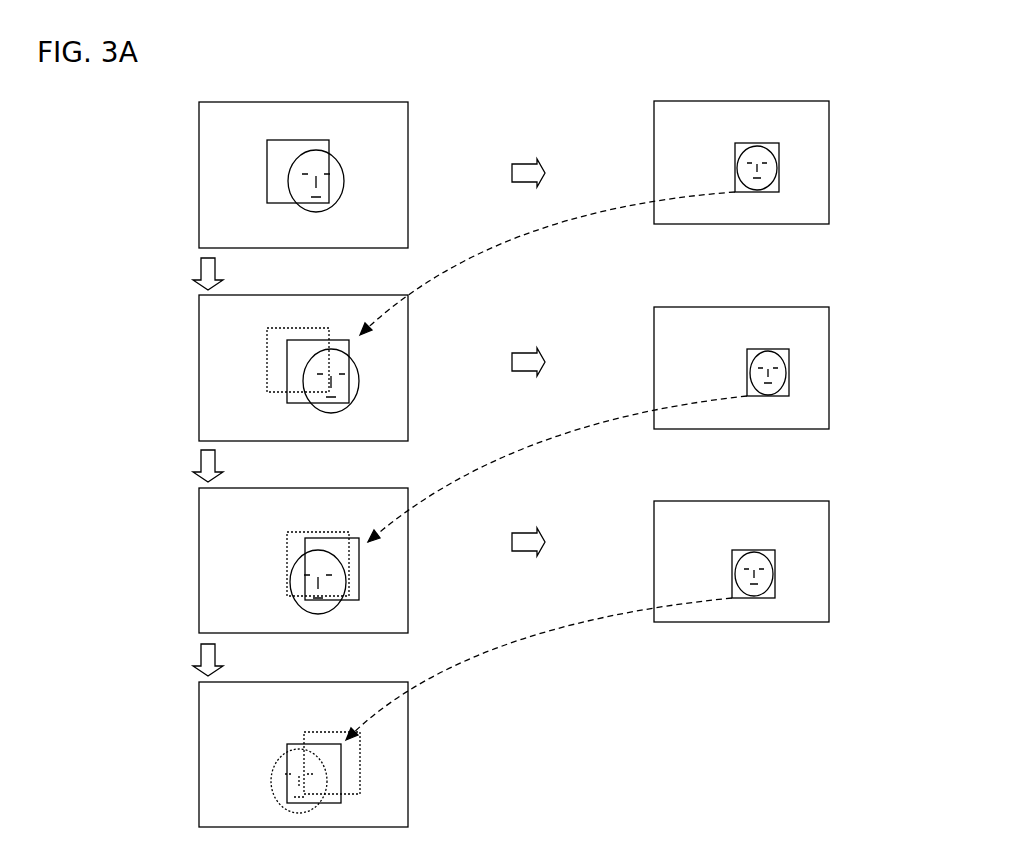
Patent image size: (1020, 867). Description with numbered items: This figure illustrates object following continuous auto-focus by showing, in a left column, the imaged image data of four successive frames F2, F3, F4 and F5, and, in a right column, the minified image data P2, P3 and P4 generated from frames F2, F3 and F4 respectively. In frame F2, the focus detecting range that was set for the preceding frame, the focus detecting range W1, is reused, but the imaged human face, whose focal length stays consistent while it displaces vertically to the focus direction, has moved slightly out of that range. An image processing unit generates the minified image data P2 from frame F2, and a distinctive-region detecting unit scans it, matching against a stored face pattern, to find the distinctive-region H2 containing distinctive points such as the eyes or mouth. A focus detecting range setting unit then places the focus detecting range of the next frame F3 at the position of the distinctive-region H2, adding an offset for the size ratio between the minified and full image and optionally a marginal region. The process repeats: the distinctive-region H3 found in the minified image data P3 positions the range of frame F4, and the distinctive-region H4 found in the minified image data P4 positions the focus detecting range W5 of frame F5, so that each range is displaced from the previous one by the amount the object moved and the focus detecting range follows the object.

The frame F2 is at (199, 170).
The frame F3 is at (199, 363).
The frame F4 is at (199, 556).
The frame F5 is at (199, 750).
The focus detecting range W1 is at (319, 137).
The focus detecting range W5 is at (287, 744).
The distinctive-region H2 is at (773, 143).
The distinctive-region H3 is at (788, 348).
The distinctive-region H4 is at (743, 550).
The minified image data P2 is at (654, 172).
The minified image data P3 is at (654, 363).
The minified image data P4 is at (654, 555).